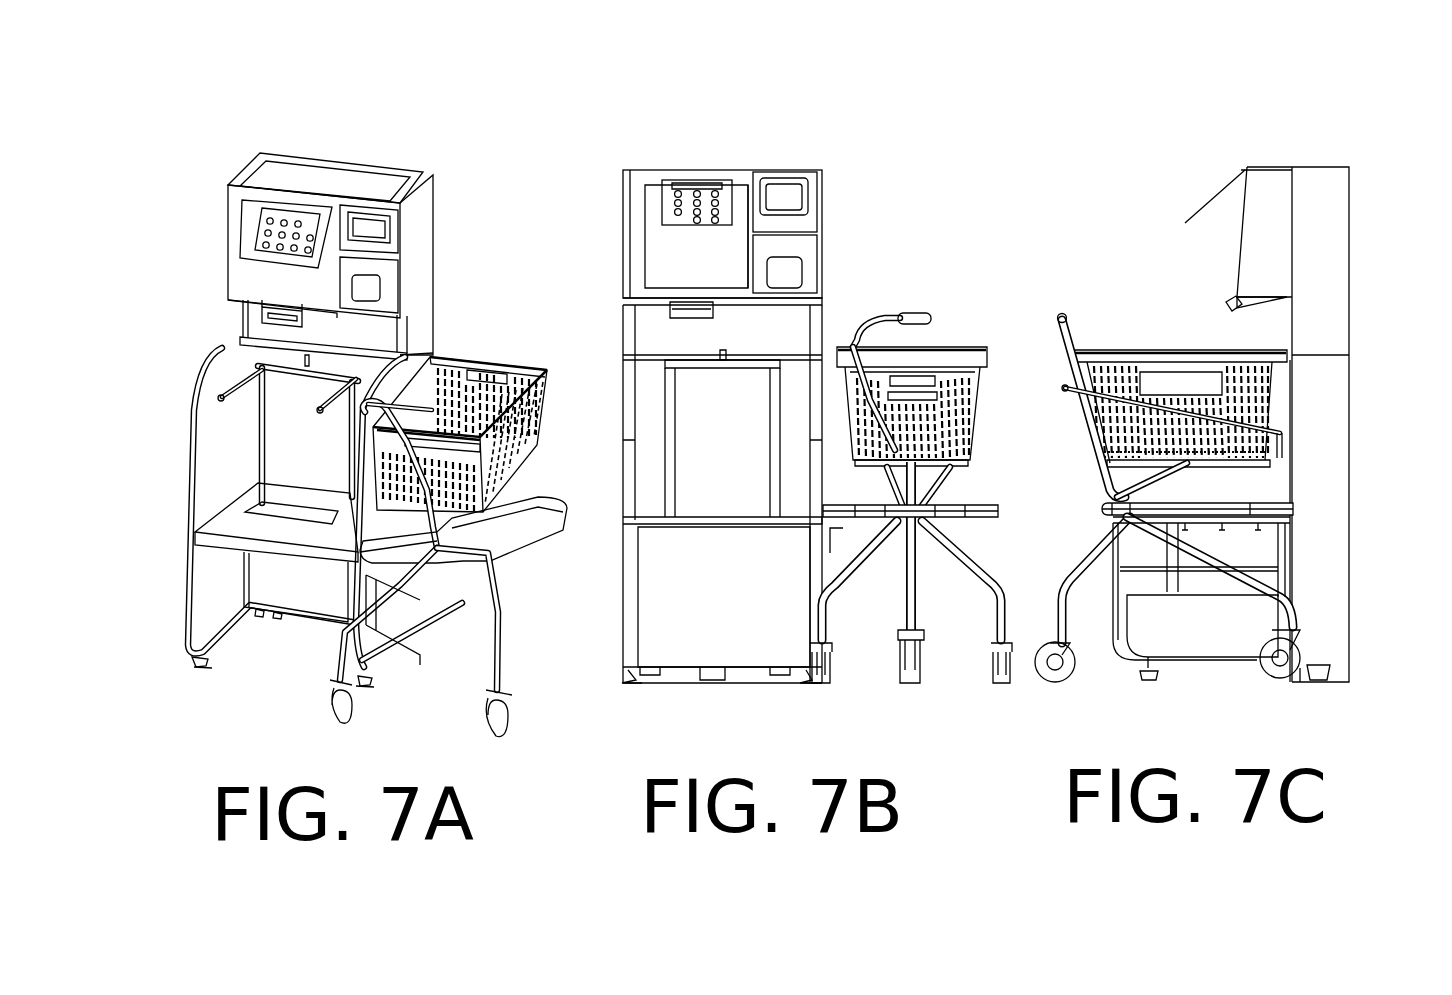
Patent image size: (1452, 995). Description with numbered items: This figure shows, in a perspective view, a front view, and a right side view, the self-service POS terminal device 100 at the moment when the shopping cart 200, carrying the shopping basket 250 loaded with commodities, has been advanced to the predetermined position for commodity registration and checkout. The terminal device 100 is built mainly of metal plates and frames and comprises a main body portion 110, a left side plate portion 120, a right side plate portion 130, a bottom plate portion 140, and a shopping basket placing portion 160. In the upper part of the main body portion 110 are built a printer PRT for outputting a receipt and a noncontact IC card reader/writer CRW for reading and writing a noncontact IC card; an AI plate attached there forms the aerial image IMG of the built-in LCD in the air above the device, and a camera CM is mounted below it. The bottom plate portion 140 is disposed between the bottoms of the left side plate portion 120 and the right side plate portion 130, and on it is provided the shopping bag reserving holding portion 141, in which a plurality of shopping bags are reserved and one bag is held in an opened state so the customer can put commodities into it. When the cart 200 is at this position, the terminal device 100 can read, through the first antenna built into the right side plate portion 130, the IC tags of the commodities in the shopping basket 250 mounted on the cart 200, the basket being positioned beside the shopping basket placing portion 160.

In FIG. 7A, the self-service POS terminal device 100 is at (325, 385).
In FIG. 7B, the self-service POS terminal device 100 is at (742, 380).
In FIG. 7A, the main body portion 110 is at (425, 268).
In FIG. 7B, the main body portion 110 is at (822, 265).
In FIG. 7C, the main body portion 110 is at (1335, 272).
In FIG. 7A, the left side plate portion 120 is at (238, 350).
In FIG. 7B, the left side plate portion 120 is at (632, 368).
In FIG. 7A, the right side plate portion 130 is at (455, 330).
In FIG. 7B, the right side plate portion 130 is at (854, 316).
In FIG. 7A, the bottom plate portion 140 is at (313, 540).
In FIG. 7B, the bottom plate portion 140 is at (720, 525).
In FIG. 7A, the shopping bag reserving holding portion 141 is at (262, 436).
In FIG. 7B, the shopping bag reserving holding portion 141 is at (640, 497).
In FIG. 7A, the shopping basket placing portion 160 is at (535, 500).
In FIG. 7B, the shopping basket placing portion 160 is at (1000, 482).
In FIG. 7C, the shopping basket placing portion 160 is at (1103, 520).
In FIG. 7A, the shopping cart 200 is at (471, 514).
In FIG. 7B, the shopping cart 200 is at (936, 483).
In FIG. 7C, the shopping cart 200 is at (1158, 486).
In FIG. 7A, the shopping basket 250 is at (534, 352).
In FIG. 7B, the shopping basket 250 is at (950, 342).
In FIG. 7C, the shopping basket 250 is at (1106, 345).
In FIG. 7A, the aerial image IMG is at (255, 245).
In FIG. 7C, the aerial image IMG is at (1202, 205).
In FIG. 7A, the camera CM is at (262, 312).
In FIG. 7C, the camera CM is at (1232, 297).
In FIG. 7B, the printer PRT is at (790, 198).
In FIG. 7B, the noncontact IC card reader/writer CRW is at (790, 265).